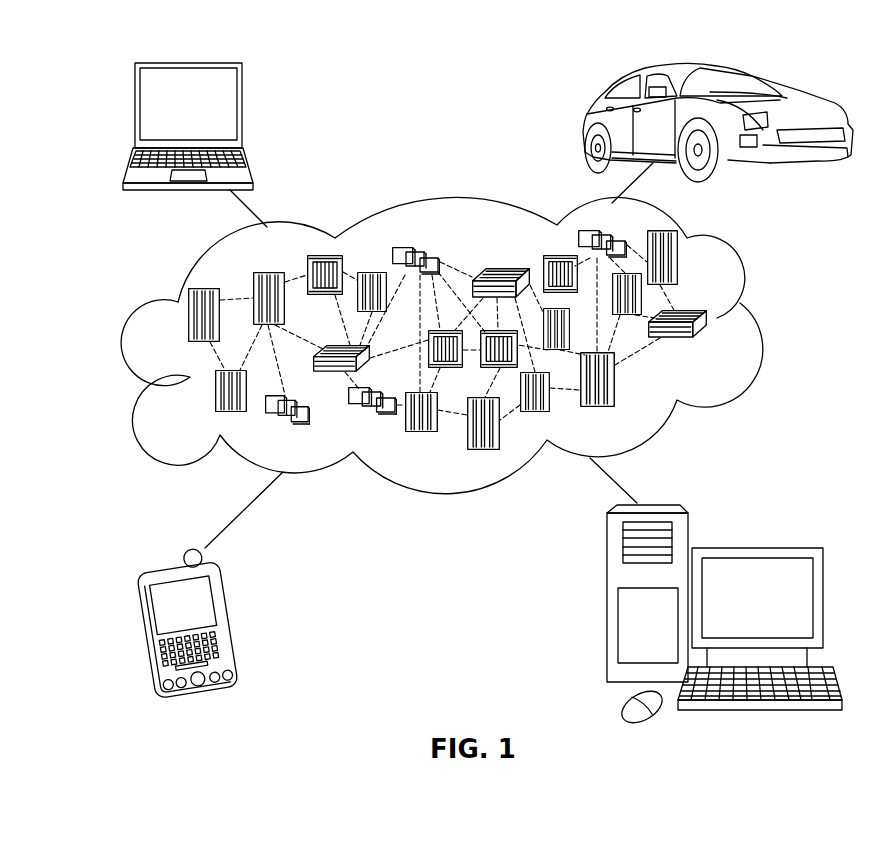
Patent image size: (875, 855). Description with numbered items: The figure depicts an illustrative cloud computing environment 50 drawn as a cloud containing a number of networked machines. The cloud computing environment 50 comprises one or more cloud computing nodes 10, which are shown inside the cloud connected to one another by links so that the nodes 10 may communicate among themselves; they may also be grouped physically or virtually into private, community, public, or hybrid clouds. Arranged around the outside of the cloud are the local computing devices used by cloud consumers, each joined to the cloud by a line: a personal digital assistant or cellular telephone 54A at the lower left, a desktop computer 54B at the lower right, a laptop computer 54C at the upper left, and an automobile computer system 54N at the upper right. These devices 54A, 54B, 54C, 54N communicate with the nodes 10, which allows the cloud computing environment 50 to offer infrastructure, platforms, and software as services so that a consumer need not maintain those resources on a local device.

The cloud computing nodes 10 is at (497, 355).
The cloud computing environment 50 is at (758, 318).
The personal digital assistant (PDA) or cellular telephone 54A is at (233, 623).
The desktop computer 54B is at (757, 548).
The laptop computer 54C is at (243, 110).
The automobile computer system 54N is at (582, 122).